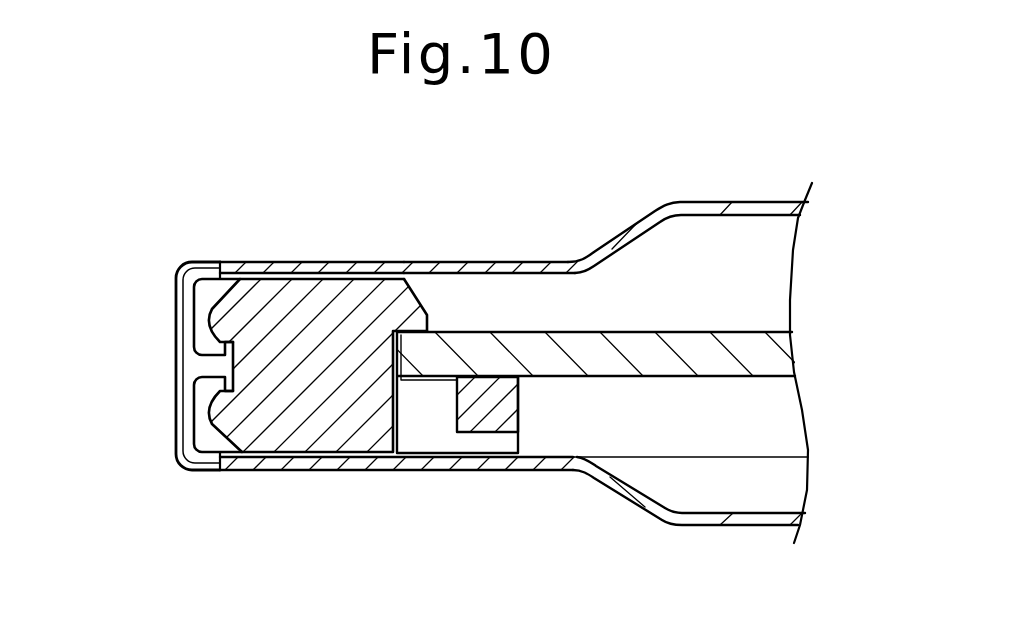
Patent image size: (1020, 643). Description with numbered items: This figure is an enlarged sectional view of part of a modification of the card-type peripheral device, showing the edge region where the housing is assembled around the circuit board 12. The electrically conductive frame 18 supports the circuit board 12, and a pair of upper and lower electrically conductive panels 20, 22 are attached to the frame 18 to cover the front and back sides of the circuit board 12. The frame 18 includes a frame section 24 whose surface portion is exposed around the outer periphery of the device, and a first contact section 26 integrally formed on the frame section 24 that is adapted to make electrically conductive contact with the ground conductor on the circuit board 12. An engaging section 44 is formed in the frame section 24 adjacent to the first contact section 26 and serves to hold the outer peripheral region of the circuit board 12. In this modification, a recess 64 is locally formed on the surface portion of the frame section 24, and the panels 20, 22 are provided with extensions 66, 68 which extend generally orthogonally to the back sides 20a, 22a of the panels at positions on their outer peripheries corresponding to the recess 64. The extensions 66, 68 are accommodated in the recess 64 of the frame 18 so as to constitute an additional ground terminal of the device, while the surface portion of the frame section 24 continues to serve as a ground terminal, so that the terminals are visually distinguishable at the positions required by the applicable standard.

The circuit board 12 is at (683, 376).
The frame 18 is at (291, 273).
The upper panel 20 is at (605, 198).
The back side of upper panel 20a is at (506, 272).
The lower panel 22 is at (512, 536).
The back side of lower panel 22a is at (551, 459).
The frame section 24 is at (290, 442).
The first contact section 26 is at (483, 433).
The engaging section 44 is at (421, 287).
The recess 64 is at (190, 472).
The extension of upper panel 66 is at (187, 315).
The extension of lower panel 68 is at (190, 423).